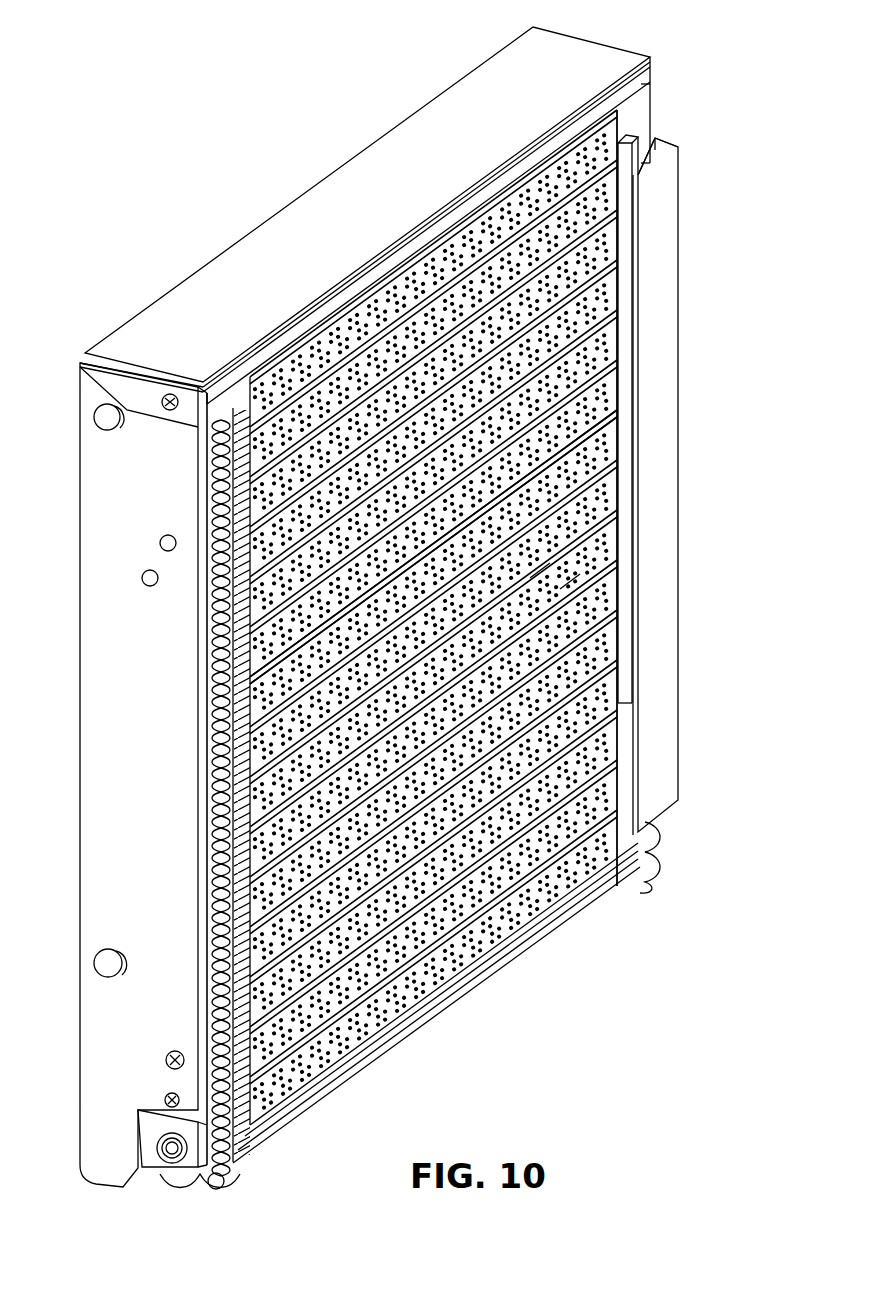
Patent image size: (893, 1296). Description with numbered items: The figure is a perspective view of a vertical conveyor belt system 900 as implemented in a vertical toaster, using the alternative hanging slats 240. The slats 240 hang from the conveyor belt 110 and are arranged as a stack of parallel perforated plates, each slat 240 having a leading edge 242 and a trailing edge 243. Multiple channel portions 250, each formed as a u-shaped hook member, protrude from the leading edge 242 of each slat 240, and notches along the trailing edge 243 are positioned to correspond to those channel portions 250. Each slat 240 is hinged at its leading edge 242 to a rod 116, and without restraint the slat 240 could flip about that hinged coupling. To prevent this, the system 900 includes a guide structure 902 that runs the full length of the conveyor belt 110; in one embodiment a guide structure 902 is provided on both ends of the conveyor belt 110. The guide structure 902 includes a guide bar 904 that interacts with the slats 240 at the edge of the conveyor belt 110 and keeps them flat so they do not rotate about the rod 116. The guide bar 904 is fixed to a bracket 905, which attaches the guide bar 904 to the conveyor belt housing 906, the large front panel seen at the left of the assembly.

The vertical conveyor belt system 900 is at (199, 152).
The rod 116 is at (424, 297).
The slat 240 is at (610, 422).
The channel portion 250 is at (517, 475).
The leading edge 242 is at (568, 574).
The trailing edge 243 is at (538, 581).
The guide bar 904 is at (633, 138).
The guide structure 902 is at (660, 302).
The bracket 905 is at (665, 138).
The conveyor belt housing 906 is at (127, 640).
The conveyor belt 110 is at (548, 1002).